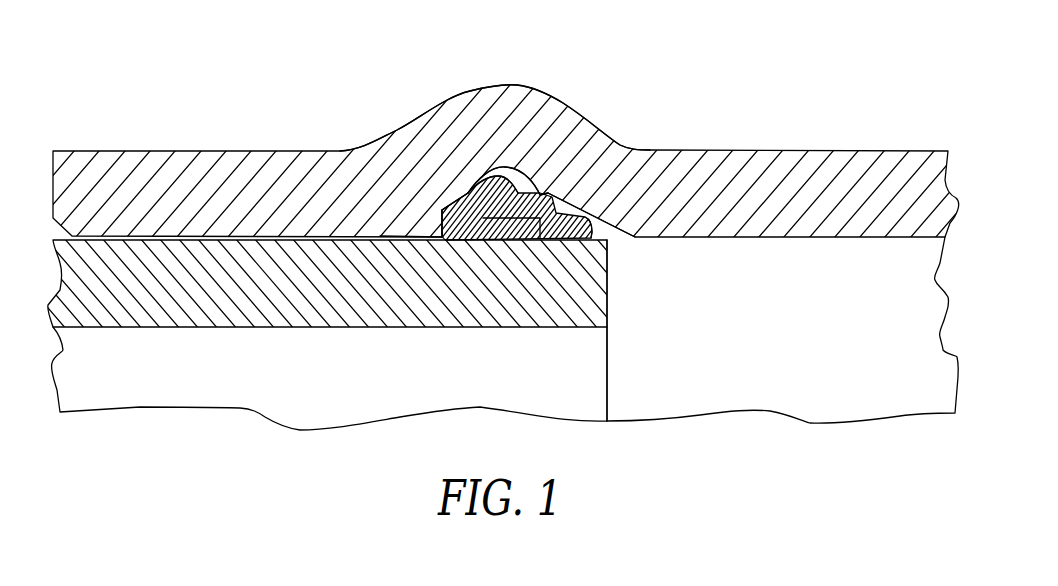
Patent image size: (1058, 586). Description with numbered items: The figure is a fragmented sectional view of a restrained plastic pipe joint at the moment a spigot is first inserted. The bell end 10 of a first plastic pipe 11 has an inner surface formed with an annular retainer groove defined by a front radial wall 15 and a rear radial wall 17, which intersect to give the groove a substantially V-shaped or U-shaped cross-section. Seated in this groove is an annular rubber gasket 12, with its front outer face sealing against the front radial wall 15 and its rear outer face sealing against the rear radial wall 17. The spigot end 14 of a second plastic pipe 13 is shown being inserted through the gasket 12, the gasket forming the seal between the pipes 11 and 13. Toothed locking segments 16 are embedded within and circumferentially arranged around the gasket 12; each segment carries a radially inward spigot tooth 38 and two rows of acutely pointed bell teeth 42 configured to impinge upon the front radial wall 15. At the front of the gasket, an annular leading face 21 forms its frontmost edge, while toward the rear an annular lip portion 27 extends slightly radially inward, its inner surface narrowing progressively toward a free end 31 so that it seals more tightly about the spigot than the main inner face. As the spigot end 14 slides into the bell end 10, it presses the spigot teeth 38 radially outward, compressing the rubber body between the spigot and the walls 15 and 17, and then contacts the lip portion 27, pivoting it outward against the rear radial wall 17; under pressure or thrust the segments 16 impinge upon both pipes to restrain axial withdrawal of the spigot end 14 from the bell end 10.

The bell end 10 is at (165, 150).
The first plastic pipe 11 is at (789, 86).
The gasket 12 is at (518, 193).
The second plastic pipe 13 is at (173, 325).
The spigot end 14 is at (609, 300).
The front radial wall 15 is at (420, 226).
The toothed locking segment 16 is at (472, 192).
The rear radial wall 17 is at (549, 193).
The leading face 21 is at (440, 212).
The lip portion 27 is at (587, 203).
The free end 31 is at (596, 243).
The spigot tooth 38 is at (542, 237).
The bell teeth 42 is at (464, 197).